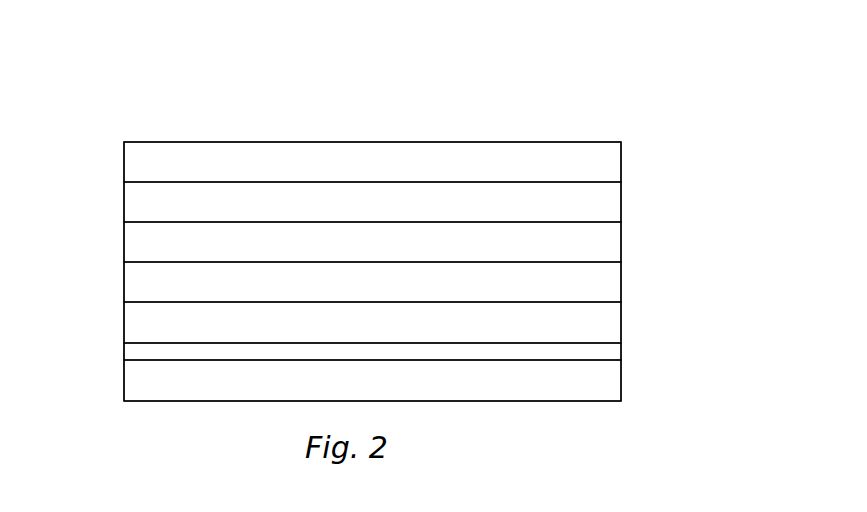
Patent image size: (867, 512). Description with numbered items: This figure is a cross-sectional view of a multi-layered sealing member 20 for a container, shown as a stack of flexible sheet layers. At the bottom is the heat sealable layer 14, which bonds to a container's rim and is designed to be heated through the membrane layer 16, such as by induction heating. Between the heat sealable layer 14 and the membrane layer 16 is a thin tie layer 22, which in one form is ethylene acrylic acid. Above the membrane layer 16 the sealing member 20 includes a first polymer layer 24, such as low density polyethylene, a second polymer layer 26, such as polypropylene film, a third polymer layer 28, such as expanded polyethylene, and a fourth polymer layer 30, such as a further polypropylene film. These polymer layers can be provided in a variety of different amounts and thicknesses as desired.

The sealing member 20 is at (607, 112).
The fourth polymer layer 30 is at (124, 162).
The third polymer layer 28 is at (124, 202).
The second polymer layer 26 is at (622, 241).
The first polymer layer 24 is at (622, 283).
The membrane layer 16 is at (124, 322).
The tie layer 22 is at (622, 349).
The heat sealable layer 14 is at (622, 382).